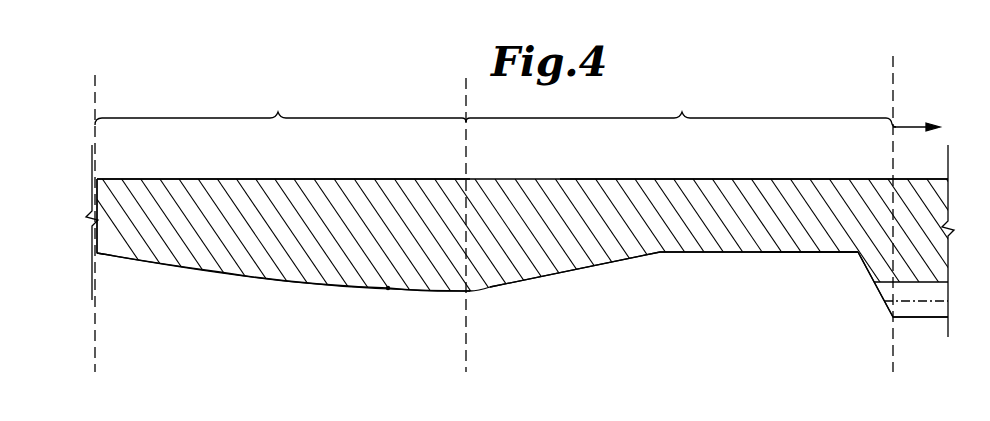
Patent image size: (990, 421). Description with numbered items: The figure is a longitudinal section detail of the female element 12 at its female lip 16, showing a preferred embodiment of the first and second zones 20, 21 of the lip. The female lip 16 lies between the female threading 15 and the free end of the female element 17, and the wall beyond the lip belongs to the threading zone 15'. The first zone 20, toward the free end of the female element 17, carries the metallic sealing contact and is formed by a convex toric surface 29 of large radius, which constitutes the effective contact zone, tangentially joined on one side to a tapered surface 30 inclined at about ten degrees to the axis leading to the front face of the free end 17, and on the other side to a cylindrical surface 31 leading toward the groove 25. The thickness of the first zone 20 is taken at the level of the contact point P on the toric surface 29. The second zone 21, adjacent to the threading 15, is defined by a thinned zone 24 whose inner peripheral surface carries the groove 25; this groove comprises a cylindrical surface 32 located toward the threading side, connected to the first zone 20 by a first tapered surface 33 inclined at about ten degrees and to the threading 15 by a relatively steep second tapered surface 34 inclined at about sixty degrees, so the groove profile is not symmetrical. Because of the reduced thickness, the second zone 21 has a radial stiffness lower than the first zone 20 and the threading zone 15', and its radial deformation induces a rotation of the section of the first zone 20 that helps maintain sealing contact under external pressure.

The female element 12 is at (728, 179).
The female threading 15 is at (911, 330).
The threading zone 15' is at (916, 116).
The female lip 16 is at (432, 179).
The free end of the female element 17 is at (92, 207).
The first zone 20 is at (280, 104).
The second zone 21 is at (681, 105).
The thinned zone 24 is at (802, 233).
The groove 25 is at (757, 266).
The convex toric surface 29 is at (286, 283).
The tapered surface 30 is at (164, 264).
The cylindrical surface 31 is at (448, 292).
The cylindrical surface 32 is at (797, 252).
The first tapered surface 33 is at (562, 273).
The second tapered surface 34 is at (880, 292).
The contact point P is at (389, 303).